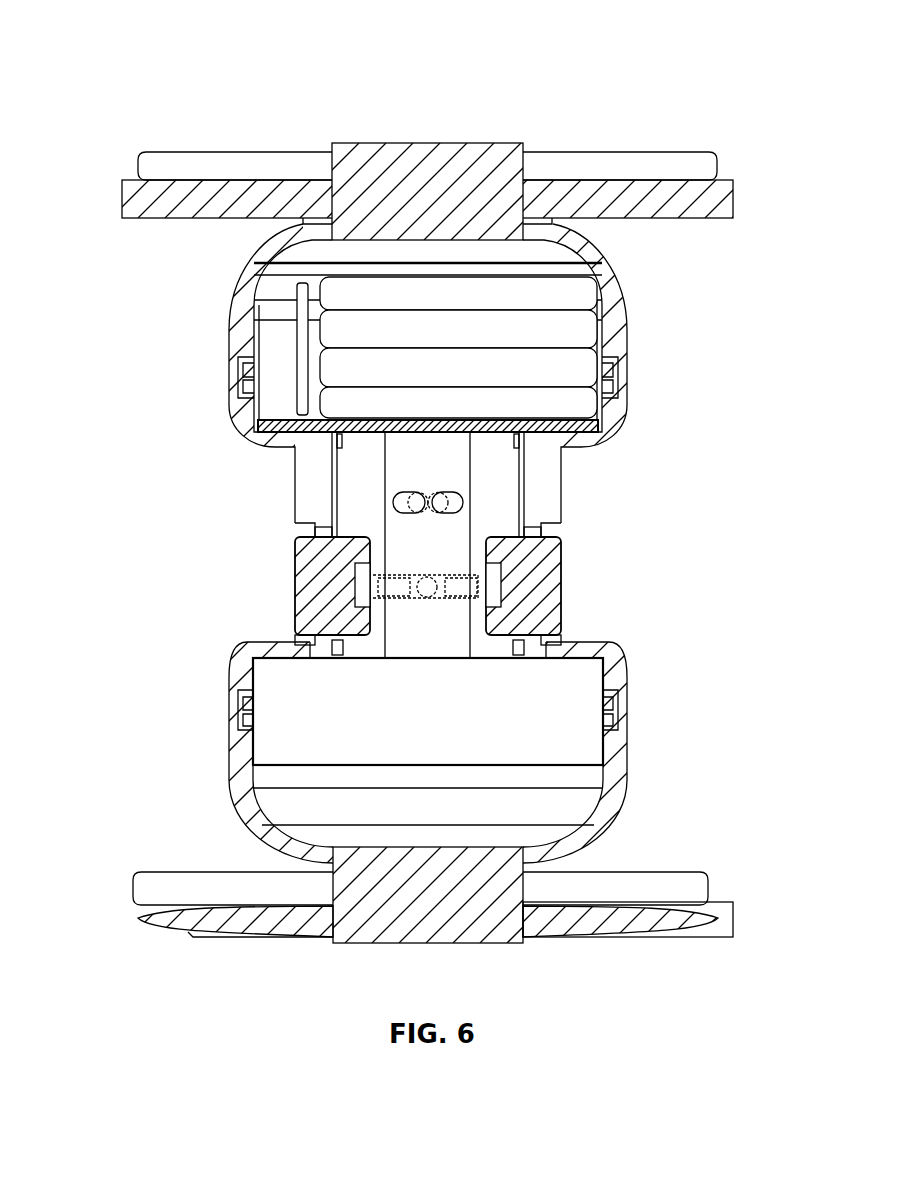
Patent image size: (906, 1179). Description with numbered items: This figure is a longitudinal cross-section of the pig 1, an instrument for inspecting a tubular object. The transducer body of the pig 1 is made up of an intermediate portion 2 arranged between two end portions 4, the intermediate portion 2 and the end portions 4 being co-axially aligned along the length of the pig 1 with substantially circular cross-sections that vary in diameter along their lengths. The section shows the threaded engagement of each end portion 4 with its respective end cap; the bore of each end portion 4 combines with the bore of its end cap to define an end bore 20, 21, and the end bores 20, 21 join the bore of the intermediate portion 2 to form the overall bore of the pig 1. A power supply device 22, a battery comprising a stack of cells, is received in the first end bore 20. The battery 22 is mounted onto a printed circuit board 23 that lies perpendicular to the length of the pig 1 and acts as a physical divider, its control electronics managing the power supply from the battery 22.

The pig 1 is at (453, 483).
The intermediate portion 2 is at (138, 546).
The end portion 4 is at (138, 297).
The first end bore 20 is at (545, 257).
The end bore 21 is at (555, 712).
The power supply device 22 is at (585, 368).
The printed circuit board 23 is at (607, 436).